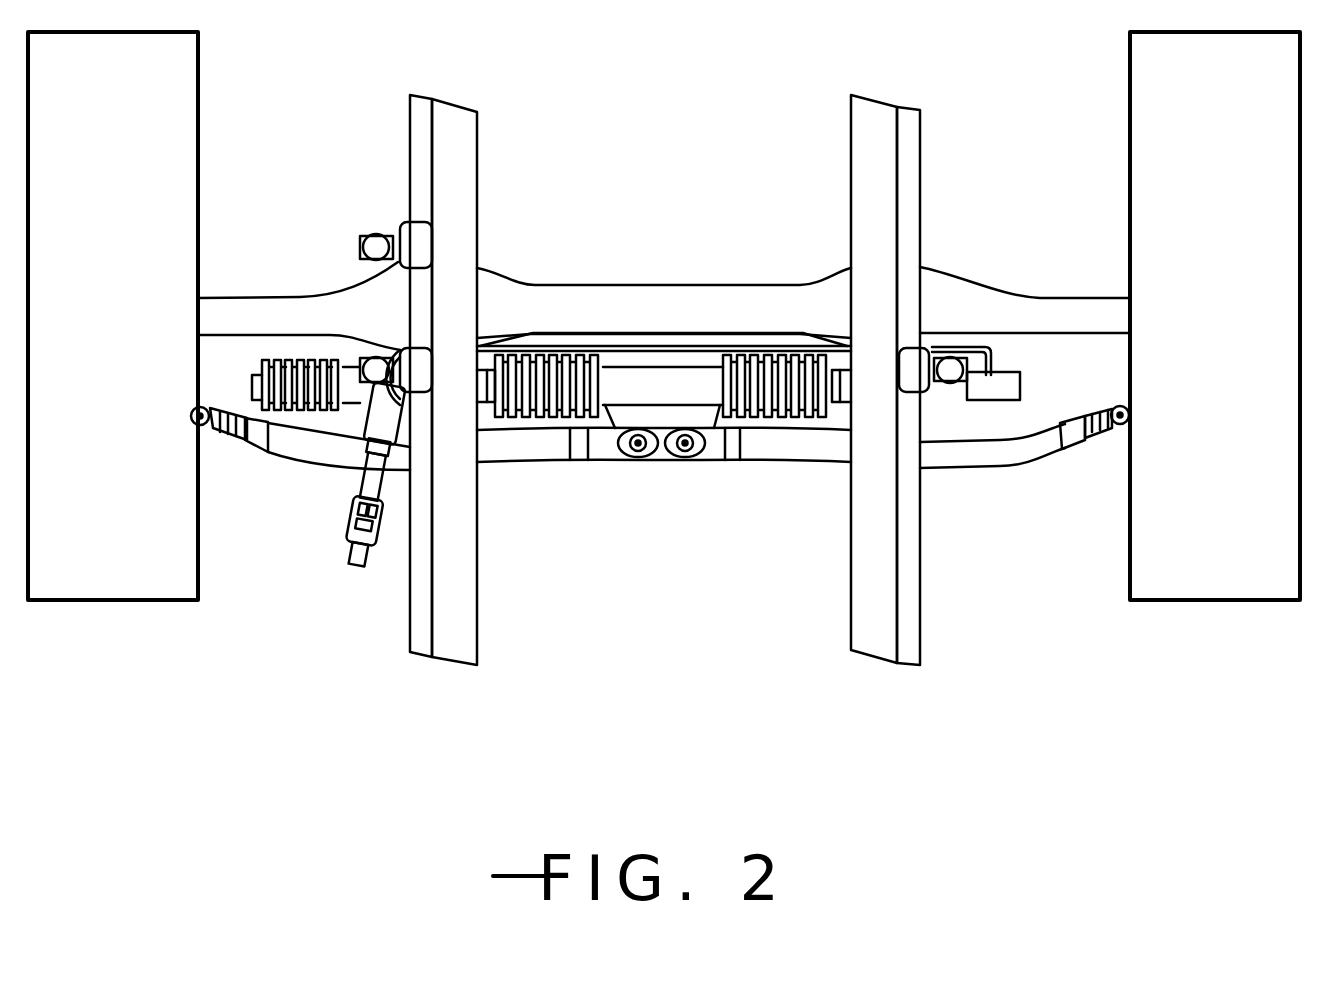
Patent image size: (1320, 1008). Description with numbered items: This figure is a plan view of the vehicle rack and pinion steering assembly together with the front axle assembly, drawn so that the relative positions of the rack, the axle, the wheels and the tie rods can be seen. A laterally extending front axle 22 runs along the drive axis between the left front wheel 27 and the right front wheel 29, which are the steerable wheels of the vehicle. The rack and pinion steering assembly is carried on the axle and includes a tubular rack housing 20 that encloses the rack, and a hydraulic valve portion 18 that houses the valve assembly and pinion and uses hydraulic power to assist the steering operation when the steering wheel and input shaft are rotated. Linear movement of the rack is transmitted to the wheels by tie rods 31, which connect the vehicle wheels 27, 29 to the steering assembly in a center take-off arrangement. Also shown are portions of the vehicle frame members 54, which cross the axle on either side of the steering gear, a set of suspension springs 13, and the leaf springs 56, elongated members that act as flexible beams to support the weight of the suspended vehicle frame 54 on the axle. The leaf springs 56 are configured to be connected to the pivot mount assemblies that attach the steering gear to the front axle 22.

The suspension springs 13 is at (376, 247).
The hydraulic valve portion 18 is at (365, 473).
The rack housing 20 is at (693, 382).
The front axle 22 is at (762, 282).
The left front wheel 27 is at (1160, 130).
The right front wheel 29 is at (165, 170).
The tie rods 31 is at (495, 448).
The vehicle frame members 54 is at (475, 226).
The leaf springs 56 is at (418, 170).